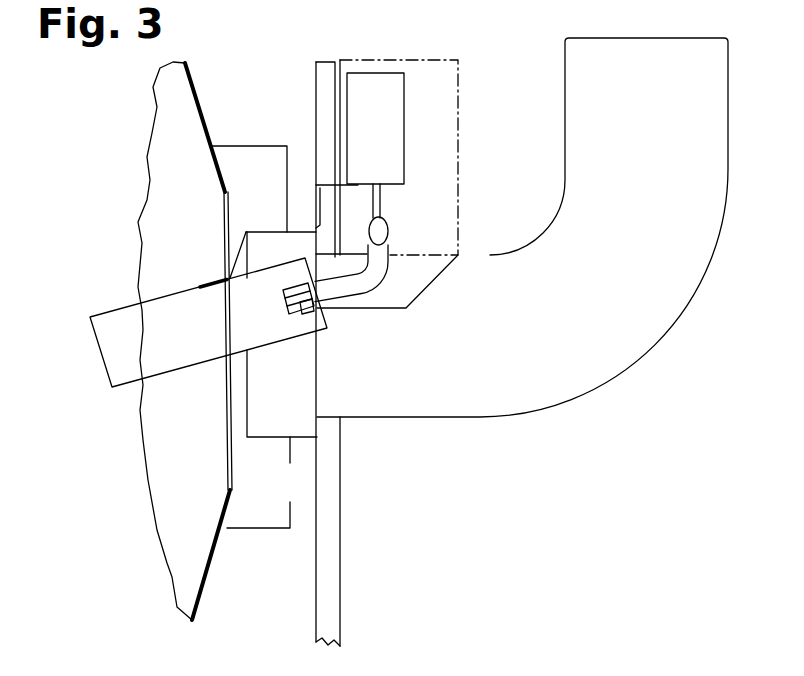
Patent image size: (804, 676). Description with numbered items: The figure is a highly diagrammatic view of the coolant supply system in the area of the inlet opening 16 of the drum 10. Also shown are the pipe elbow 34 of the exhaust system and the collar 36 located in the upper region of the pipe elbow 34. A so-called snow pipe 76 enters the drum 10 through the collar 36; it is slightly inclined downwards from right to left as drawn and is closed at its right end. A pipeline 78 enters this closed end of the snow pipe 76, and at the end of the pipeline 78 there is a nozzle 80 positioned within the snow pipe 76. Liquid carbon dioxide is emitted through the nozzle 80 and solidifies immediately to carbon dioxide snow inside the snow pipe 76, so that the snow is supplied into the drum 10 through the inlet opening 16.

The drum 10 is at (195, 88).
The inlet opening 16 is at (227, 210).
The pipe elbow 34 is at (525, 390).
The collar 36 is at (300, 420).
The snow pipe 76 is at (122, 307).
The pipeline 78 is at (375, 270).
The nozzle 80 is at (325, 322).